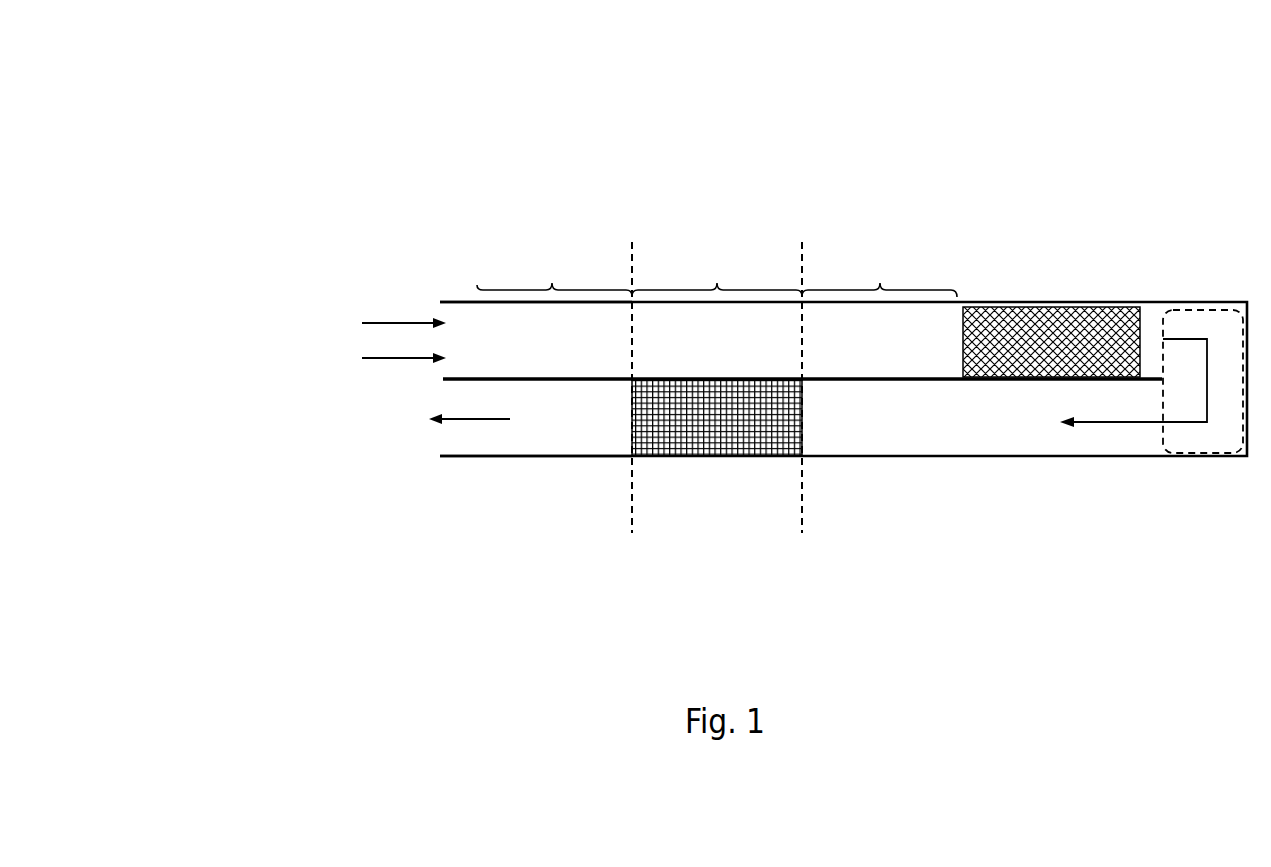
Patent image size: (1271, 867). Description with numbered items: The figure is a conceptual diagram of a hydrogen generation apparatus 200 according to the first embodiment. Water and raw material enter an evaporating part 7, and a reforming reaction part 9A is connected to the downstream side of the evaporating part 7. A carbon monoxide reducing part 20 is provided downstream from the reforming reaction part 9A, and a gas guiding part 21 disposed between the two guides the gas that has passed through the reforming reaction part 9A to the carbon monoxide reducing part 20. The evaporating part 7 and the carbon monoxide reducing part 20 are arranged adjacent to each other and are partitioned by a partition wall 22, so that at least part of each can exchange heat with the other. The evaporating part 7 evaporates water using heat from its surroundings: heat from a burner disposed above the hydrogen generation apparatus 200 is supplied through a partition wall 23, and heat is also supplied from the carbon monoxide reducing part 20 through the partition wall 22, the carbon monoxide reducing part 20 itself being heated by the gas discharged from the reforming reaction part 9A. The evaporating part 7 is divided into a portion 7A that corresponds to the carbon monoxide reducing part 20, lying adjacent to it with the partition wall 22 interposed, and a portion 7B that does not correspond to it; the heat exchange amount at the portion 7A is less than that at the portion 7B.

The hydrogen generation apparatus 200 is at (1226, 94).
The evaporating part 7 is at (930, 95).
The portion corresponding to the carbon monoxide reducing part 7A is at (717, 283).
The portion not corresponding to the carbon monoxide reducing part 7B is at (552, 283).
The reforming reaction part 9A is at (1065, 307).
The carbon monoxide reducing part 20 is at (717, 456).
The gas guiding part 21 is at (1150, 460).
The partition wall 22 is at (460, 379).
The partition wall 23 is at (460, 301).